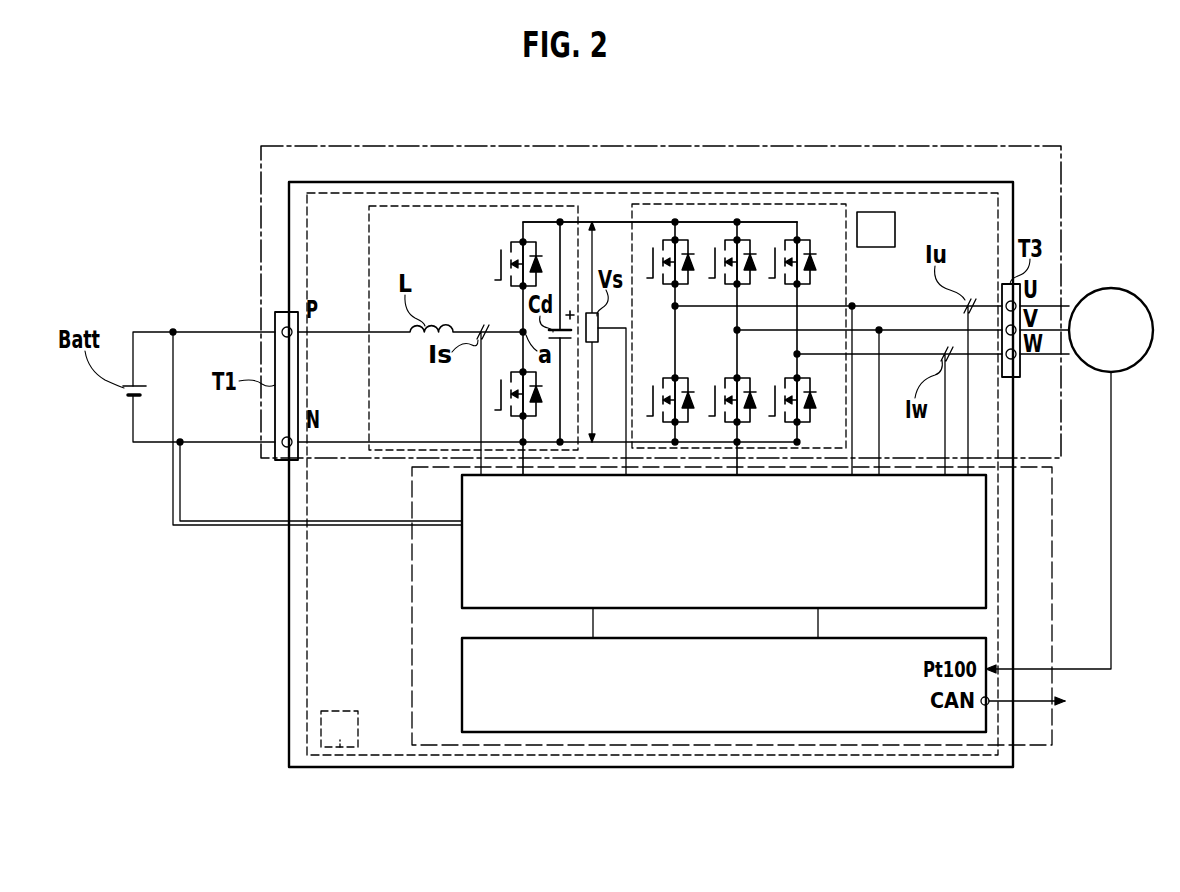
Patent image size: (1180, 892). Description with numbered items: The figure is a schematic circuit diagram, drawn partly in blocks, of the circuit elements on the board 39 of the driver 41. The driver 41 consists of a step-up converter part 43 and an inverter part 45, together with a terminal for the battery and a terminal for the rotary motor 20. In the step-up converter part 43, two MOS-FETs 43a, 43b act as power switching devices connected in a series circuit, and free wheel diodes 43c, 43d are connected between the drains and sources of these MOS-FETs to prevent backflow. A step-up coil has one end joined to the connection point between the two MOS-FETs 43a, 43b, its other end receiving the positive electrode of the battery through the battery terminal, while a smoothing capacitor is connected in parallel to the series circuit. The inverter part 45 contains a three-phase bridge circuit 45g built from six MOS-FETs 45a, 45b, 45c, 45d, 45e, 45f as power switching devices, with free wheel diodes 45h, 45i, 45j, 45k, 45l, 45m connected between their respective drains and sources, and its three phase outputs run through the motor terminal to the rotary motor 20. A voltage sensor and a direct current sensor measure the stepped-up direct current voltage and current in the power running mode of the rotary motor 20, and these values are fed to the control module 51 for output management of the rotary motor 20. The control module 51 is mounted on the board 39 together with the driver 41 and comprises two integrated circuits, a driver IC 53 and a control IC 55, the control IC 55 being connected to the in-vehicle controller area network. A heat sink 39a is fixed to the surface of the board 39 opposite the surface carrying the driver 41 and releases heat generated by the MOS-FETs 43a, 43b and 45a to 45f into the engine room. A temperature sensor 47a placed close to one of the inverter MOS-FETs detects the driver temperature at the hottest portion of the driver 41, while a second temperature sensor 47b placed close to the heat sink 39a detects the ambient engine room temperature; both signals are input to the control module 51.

The rotary motor 20 is at (1093, 292).
The board 39 is at (683, 768).
The heat sink 39a is at (330, 768).
The driver 41 is at (975, 146).
The step-up converter part 43 is at (418, 206).
The MOS-FET 43a is at (495, 280).
The MOS-FET 43b is at (495, 410).
The free wheel diode 43c is at (545, 262).
The free wheel diode 43d is at (548, 400).
The inverter part 45 is at (720, 204).
The MOS-FET 45a is at (647, 278).
The MOS-FET 45b is at (647, 416).
The MOS-FET 45c is at (709, 278).
The MOS-FET 45d is at (709, 416).
The MOS-FET 45e is at (769, 278).
The MOS-FET 45f is at (769, 416).
The three-phase bridge circuit 45g is at (677, 220).
The free wheel diode 45h is at (692, 272).
The free wheel diode 45i is at (690, 392).
The free wheel diode 45j is at (754, 272).
The free wheel diode 45k is at (752, 392).
The free wheel diode 45l is at (814, 272).
The free wheel diode 45m is at (812, 392).
The temperature sensor 47a is at (878, 212).
The temperature sensor 47b is at (345, 748).
The control module 51 is at (1052, 538).
The driver IC 53 is at (462, 553).
The control IC 55 is at (462, 680).